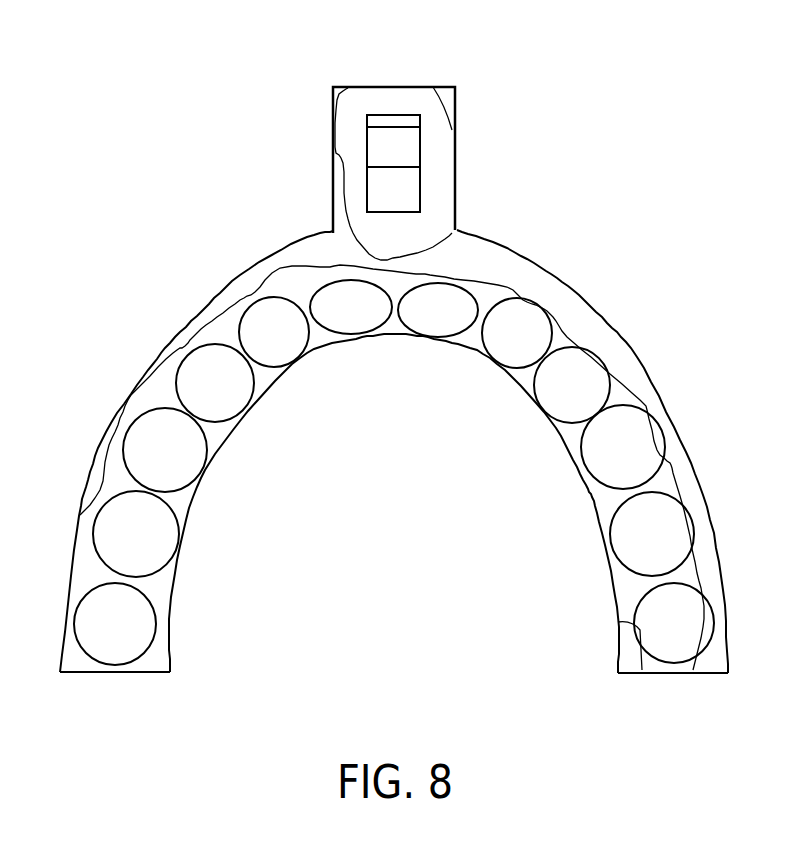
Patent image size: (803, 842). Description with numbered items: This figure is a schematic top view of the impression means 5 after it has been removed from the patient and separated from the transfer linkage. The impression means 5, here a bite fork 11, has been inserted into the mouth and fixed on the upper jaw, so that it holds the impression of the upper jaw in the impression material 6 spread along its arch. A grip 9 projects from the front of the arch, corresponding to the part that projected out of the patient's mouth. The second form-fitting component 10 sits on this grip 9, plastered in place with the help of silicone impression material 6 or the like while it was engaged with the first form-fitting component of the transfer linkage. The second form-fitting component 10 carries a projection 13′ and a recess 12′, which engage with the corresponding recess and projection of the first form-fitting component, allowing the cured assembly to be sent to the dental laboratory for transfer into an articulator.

The impression means 5 is at (222, 264).
The impression material 6 is at (82, 575).
The grip 9 is at (447, 97).
The second form-fitting component 10 is at (400, 106).
The bite fork 11 is at (107, 455).
The recess 12′ is at (412, 185).
The projection 13′ is at (407, 155).